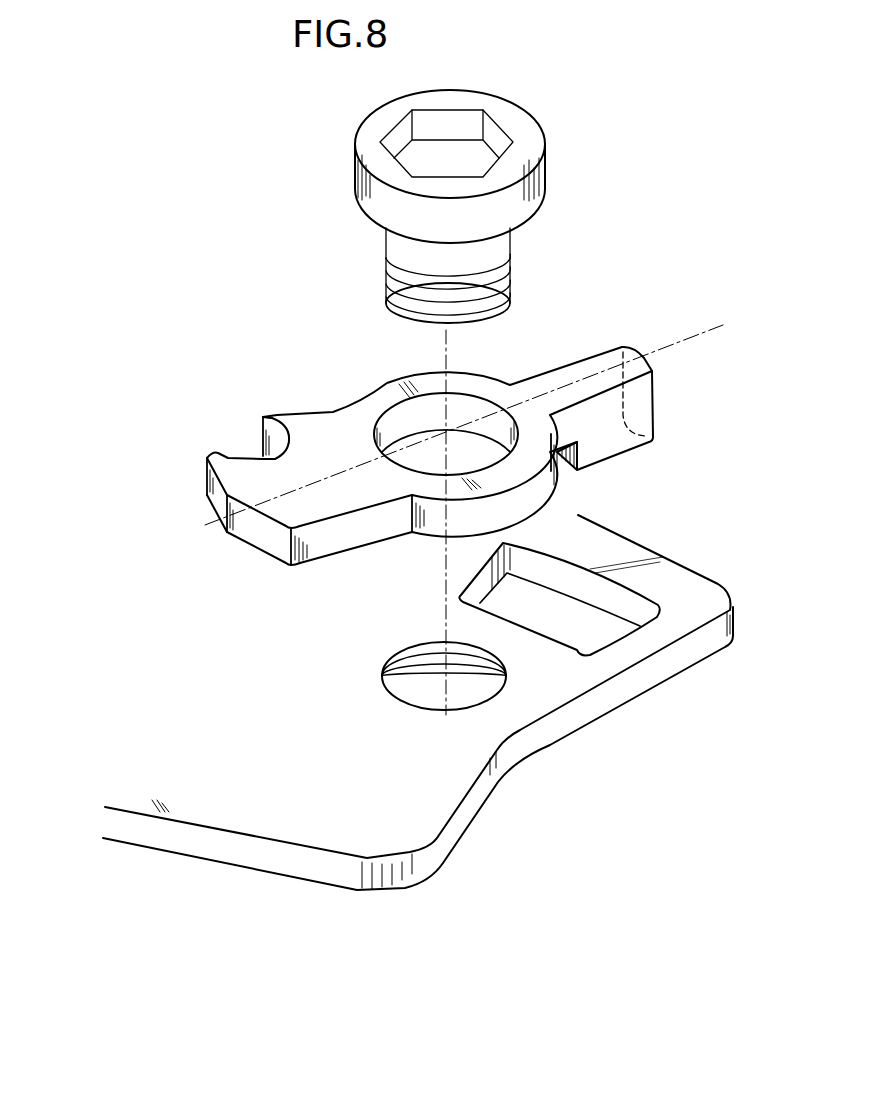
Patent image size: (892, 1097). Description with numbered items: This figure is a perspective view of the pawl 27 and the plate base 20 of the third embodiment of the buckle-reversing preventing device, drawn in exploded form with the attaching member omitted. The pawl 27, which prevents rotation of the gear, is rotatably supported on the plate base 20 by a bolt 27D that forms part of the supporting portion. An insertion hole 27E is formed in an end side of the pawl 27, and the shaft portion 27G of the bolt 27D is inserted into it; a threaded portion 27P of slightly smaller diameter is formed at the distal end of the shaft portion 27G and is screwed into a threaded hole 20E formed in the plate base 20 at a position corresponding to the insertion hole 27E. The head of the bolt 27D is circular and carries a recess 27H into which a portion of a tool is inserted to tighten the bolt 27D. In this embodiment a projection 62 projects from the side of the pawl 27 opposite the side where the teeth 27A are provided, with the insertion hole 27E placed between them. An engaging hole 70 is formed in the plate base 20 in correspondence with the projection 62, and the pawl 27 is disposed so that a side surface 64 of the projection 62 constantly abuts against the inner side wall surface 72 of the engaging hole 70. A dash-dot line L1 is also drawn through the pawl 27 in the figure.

The bolt 27D is at (511, 198).
The recess 27H is at (463, 121).
The shaft portion 27G is at (500, 247).
The threaded portion 27P is at (507, 301).
The pawl 27 is at (438, 445).
The insertion hole 27E is at (422, 412).
The teeth 27A is at (275, 420).
The projection 62 is at (602, 456).
The side surface 64 is at (633, 417).
The axis line L1 is at (675, 345).
The plate base 20 is at (418, 723).
The inner side wall surface 72 is at (621, 595).
The engaging hole 70 is at (591, 637).
The threaded hole 20E is at (470, 666).